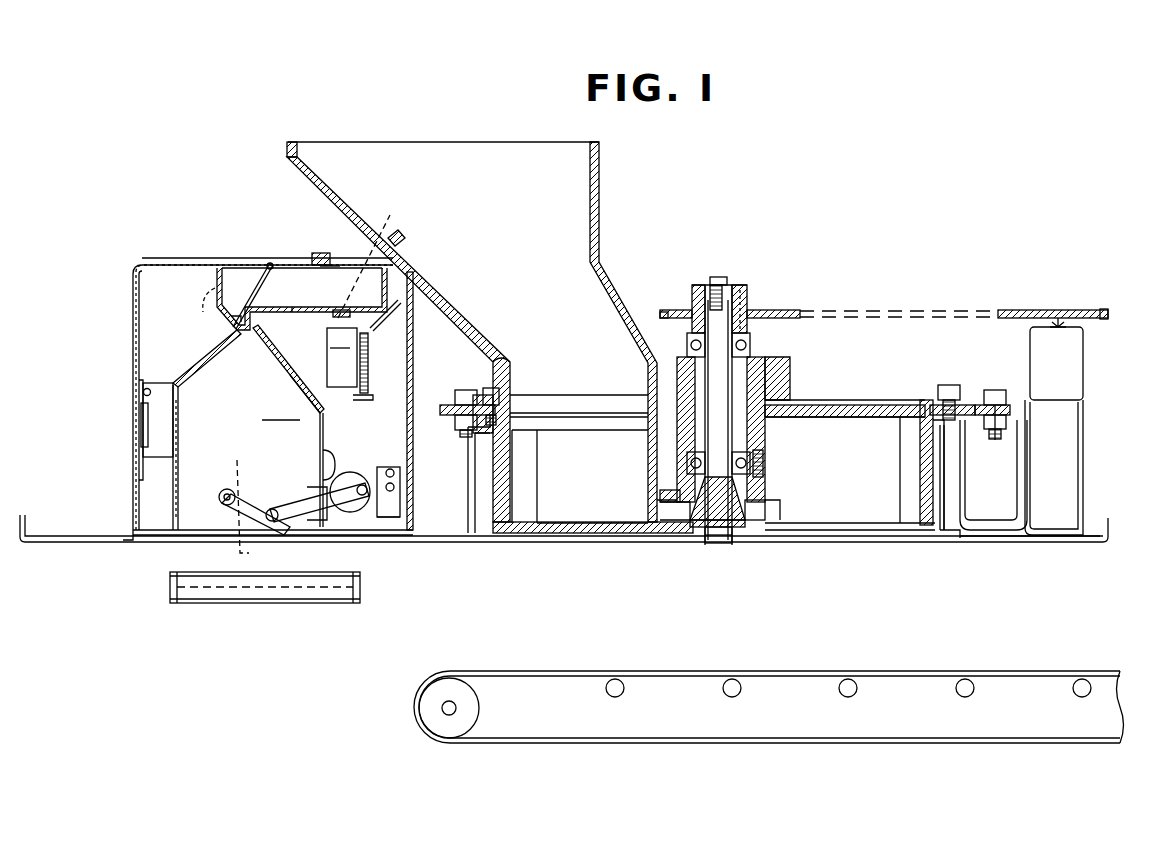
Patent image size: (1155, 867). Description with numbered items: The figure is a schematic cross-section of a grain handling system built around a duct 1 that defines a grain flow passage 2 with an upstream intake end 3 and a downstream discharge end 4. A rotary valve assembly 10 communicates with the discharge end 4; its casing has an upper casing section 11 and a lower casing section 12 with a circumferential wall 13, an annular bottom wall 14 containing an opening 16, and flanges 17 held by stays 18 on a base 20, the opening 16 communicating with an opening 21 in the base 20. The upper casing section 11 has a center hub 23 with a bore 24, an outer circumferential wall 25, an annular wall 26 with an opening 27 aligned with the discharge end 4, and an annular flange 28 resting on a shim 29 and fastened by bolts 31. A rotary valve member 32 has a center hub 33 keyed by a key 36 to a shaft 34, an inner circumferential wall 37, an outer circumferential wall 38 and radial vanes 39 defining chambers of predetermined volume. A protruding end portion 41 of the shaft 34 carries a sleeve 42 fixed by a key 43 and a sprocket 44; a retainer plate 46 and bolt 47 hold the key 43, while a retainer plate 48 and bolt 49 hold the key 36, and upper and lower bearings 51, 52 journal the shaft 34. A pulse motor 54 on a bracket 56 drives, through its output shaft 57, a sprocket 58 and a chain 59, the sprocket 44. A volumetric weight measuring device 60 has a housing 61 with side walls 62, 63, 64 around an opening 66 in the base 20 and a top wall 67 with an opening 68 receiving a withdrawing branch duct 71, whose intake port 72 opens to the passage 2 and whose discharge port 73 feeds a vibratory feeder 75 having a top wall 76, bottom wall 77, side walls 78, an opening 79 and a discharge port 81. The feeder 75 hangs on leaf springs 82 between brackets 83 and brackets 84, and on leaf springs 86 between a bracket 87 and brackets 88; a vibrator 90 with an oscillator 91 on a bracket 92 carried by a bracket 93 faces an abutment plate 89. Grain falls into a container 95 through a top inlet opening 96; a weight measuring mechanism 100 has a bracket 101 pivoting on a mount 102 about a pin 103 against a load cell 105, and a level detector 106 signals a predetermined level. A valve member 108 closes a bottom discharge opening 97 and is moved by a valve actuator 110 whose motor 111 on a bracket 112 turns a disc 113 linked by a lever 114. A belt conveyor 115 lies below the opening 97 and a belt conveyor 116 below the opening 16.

The duct 1 is at (599, 153).
The grain flow passage 2 is at (500, 244).
The upstream intake end 3 is at (295, 142).
The downstream discharge end 4 is at (506, 394).
The rotary valve assembly 10 is at (828, 384).
The upper casing section 11 is at (890, 397).
The lower casing section 12 is at (942, 526).
The circumferential wall 13 is at (945, 500).
The annular bottom wall 14 is at (585, 542).
The opening 16 is at (782, 520).
The flanges 17 is at (436, 410).
The stays 18 is at (467, 495).
The base 20 is at (1035, 538).
The opening 21 is at (960, 542).
The center hub 23 is at (764, 365).
The bore 24 is at (746, 382).
The outer circumferential wall 25 is at (920, 435).
The annular wall 26 is at (856, 408).
The opening 27 is at (556, 429).
The annular flange 28 is at (954, 399).
The shim 29 is at (997, 396).
The bolts 31 is at (498, 364).
The rotary valve member 32 is at (700, 520).
The center hub 33 is at (750, 503).
The shaft 34 is at (702, 412).
The key 36 is at (746, 520).
The inner circumferential wall 37 is at (639, 505).
The outer circumferential wall 38 is at (533, 489).
The radial vanes 39 is at (582, 506).
The protruding end portion 41 is at (660, 318).
The sleeve 42 is at (744, 309).
The key 43 is at (760, 316).
The sprocket 44 is at (674, 309).
The retainer plate 46 is at (736, 306).
The bolt 47 is at (717, 275).
The retainer plate 48 is at (713, 527).
The bolt 49 is at (716, 545).
The upper bearing 51 is at (686, 340).
The lower bearing 52 is at (687, 466).
The pulse motor 54 is at (1084, 375).
The bracket 56 is at (1083, 484).
The output shaft 57 is at (1060, 318).
The sprocket 58 is at (1091, 310).
The chain 59 is at (922, 312).
The volumetric weight measuring device 60 is at (129, 262).
The housing 61 is at (130, 320).
The side wall 62 is at (132, 364).
The side wall 63 is at (414, 350).
The side wall 64 is at (148, 296).
The opening 66 is at (415, 538).
The top wall 67 is at (173, 258).
The opening 68 is at (322, 266).
The withdrawing branch duct 71 is at (337, 252).
The intake port 72 is at (402, 236).
The discharge port 73 is at (302, 299).
The vibratory feeder 75 is at (206, 340).
The top wall 76 is at (241, 264).
The bottom wall 77 is at (276, 331).
The side walls 78 is at (250, 307).
The opening 79 is at (303, 307).
The discharge port 81 is at (267, 401).
The leaf springs 82 is at (210, 298).
The brackets 83 is at (239, 326).
The brackets 84 is at (269, 264).
The leaf springs 86 is at (339, 308).
The bracket 87 is at (400, 316).
The brackets 88 is at (373, 256).
The abutment plate 89 is at (300, 470).
The vibrator 90 is at (341, 389).
The oscillator 91 is at (370, 375).
The bracket 92 is at (374, 401).
The bracket 93 is at (352, 350).
The container 95 is at (325, 460).
The top inlet opening 96 is at (296, 382).
The bottom discharge opening 97 is at (222, 496).
The weight measuring mechanism 100 is at (160, 462).
The bracket 101 is at (162, 432).
The mount 102 is at (140, 449).
The pin 103 is at (142, 392).
The load cell 105 is at (145, 452).
The level detector 106 is at (202, 457).
The valve member 108 is at (335, 476).
The valve actuator 110 is at (401, 462).
The motor 111 is at (388, 518).
The bracket 112 is at (312, 465).
The disc 113 is at (350, 466).
The lever 114 is at (304, 521).
The belt conveyor 115 is at (258, 603).
The belt conveyor 116 is at (636, 672).